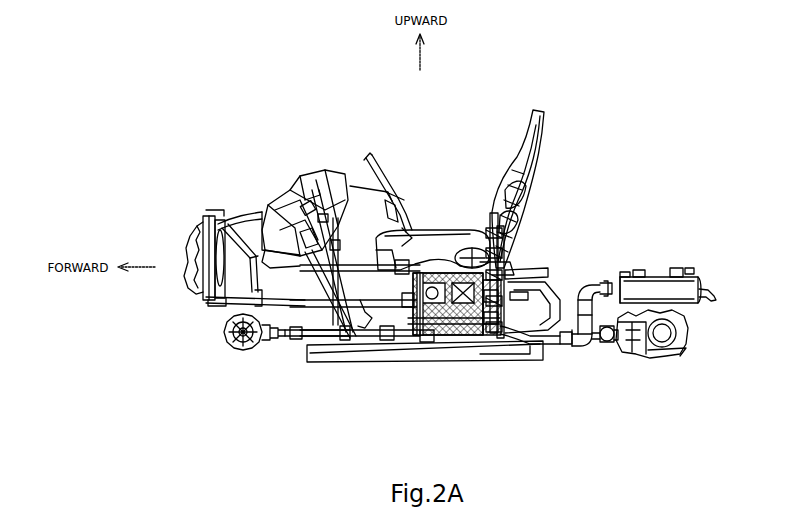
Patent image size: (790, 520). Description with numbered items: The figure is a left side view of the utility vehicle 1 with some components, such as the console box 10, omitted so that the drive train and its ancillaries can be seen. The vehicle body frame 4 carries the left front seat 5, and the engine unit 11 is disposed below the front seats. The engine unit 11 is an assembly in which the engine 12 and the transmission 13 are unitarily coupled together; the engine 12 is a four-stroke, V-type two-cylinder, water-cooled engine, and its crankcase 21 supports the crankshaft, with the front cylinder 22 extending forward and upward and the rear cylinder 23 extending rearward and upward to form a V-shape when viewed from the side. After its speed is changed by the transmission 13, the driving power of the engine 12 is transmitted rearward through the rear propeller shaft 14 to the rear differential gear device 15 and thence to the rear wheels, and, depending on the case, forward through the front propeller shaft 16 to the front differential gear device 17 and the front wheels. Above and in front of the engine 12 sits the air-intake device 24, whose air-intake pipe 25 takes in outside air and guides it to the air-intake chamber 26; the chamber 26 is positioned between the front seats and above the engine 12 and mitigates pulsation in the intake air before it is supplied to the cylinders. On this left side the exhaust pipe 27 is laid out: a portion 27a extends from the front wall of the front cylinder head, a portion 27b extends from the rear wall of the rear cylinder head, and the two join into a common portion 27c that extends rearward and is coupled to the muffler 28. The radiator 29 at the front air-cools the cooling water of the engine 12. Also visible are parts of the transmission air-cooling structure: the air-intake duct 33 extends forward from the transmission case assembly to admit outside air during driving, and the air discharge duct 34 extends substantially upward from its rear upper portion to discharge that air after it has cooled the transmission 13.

The utility vehicle 1 is at (220, 90).
The vehicle body frame 4 is at (512, 266).
The left front seat 5 is at (530, 121).
The console box 10 is at (547, 300).
The engine unit 11 is at (441, 414).
The engine 12 is at (450, 332).
The transmission 13 is at (502, 332).
The rear propeller shaft 14 is at (603, 342).
The rear differential gear device 15 is at (662, 358).
The front propeller shaft 16 is at (318, 340).
The front differential gear device 17 is at (243, 352).
The crankcase 21 is at (435, 340).
The front cylinder 22 is at (360, 352).
The rear cylinder 23 is at (530, 289).
The air-intake device 24 is at (432, 228).
The air-intake pipe 25 is at (350, 248).
The air-intake chamber 26 is at (452, 232).
The exhaust pipe 27 is at (589, 285).
The exhaust pipe portion 27a is at (388, 352).
The exhaust pipe portion 27b is at (548, 347).
The common portion 27c is at (591, 348).
The muffler 28 is at (663, 276).
The radiator 29 is at (206, 286).
The air-intake duct 33 is at (332, 352).
The air discharge duct 34 is at (479, 236).